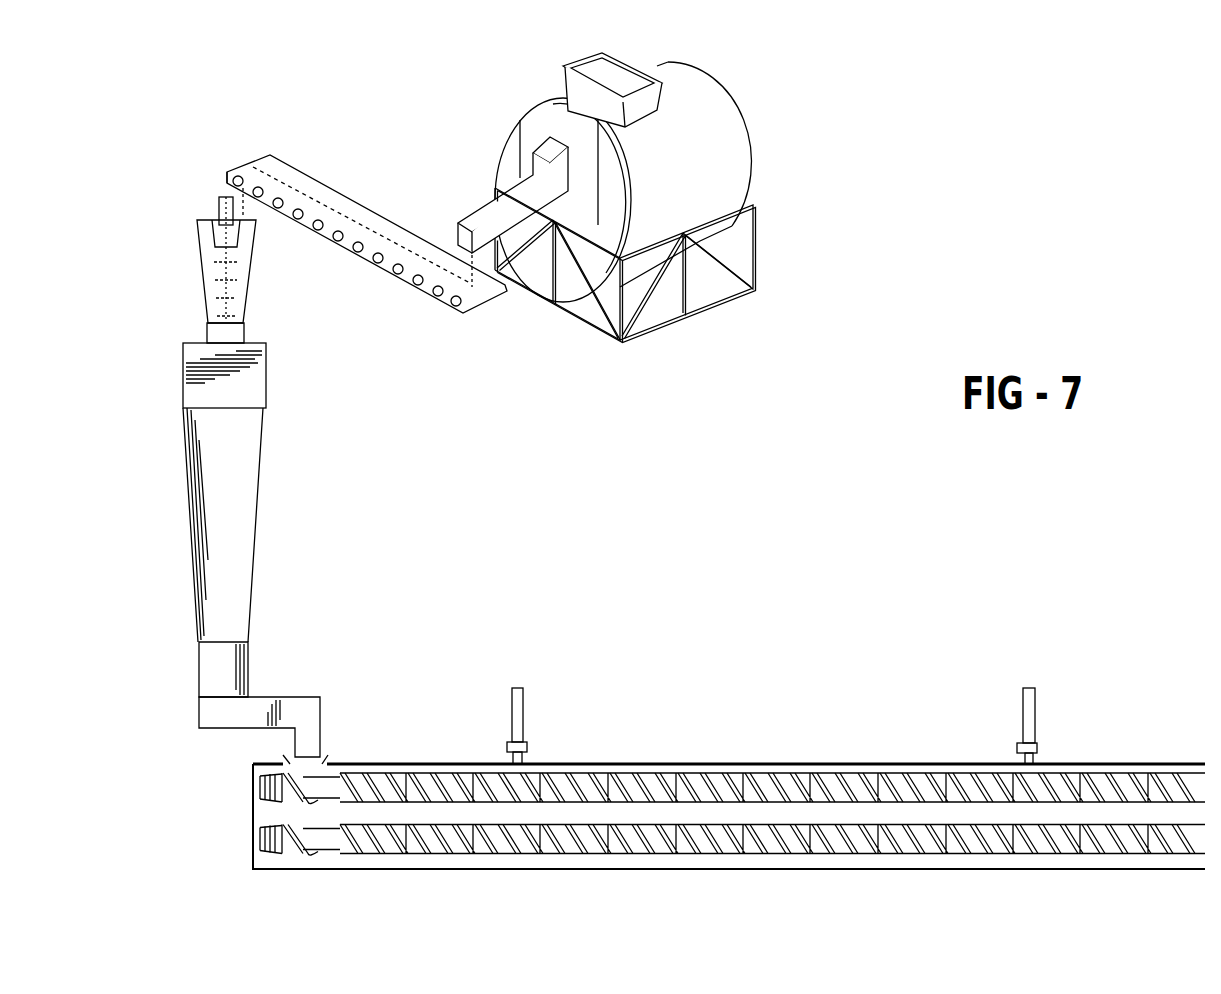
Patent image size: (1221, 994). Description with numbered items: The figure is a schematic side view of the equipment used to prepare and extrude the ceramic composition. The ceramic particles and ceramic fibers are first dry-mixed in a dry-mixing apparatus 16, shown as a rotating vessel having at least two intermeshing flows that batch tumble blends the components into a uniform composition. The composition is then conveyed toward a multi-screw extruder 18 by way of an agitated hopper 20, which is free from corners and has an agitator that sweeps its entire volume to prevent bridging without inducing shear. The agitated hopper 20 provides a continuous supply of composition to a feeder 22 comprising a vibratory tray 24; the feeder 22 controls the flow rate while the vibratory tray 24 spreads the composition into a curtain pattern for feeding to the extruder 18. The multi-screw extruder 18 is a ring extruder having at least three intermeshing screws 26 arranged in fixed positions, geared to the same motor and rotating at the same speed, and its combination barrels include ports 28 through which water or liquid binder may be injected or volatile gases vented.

The dry-mixing apparatus 16 is at (720, 185).
The multi-screw extruder 18 is at (776, 761).
The agitated hopper 20 is at (266, 282).
The feeder 22 is at (270, 388).
The vibratory tray 24 is at (281, 692).
The intermeshing screws 26 is at (693, 775).
The ports 28 is at (526, 717).